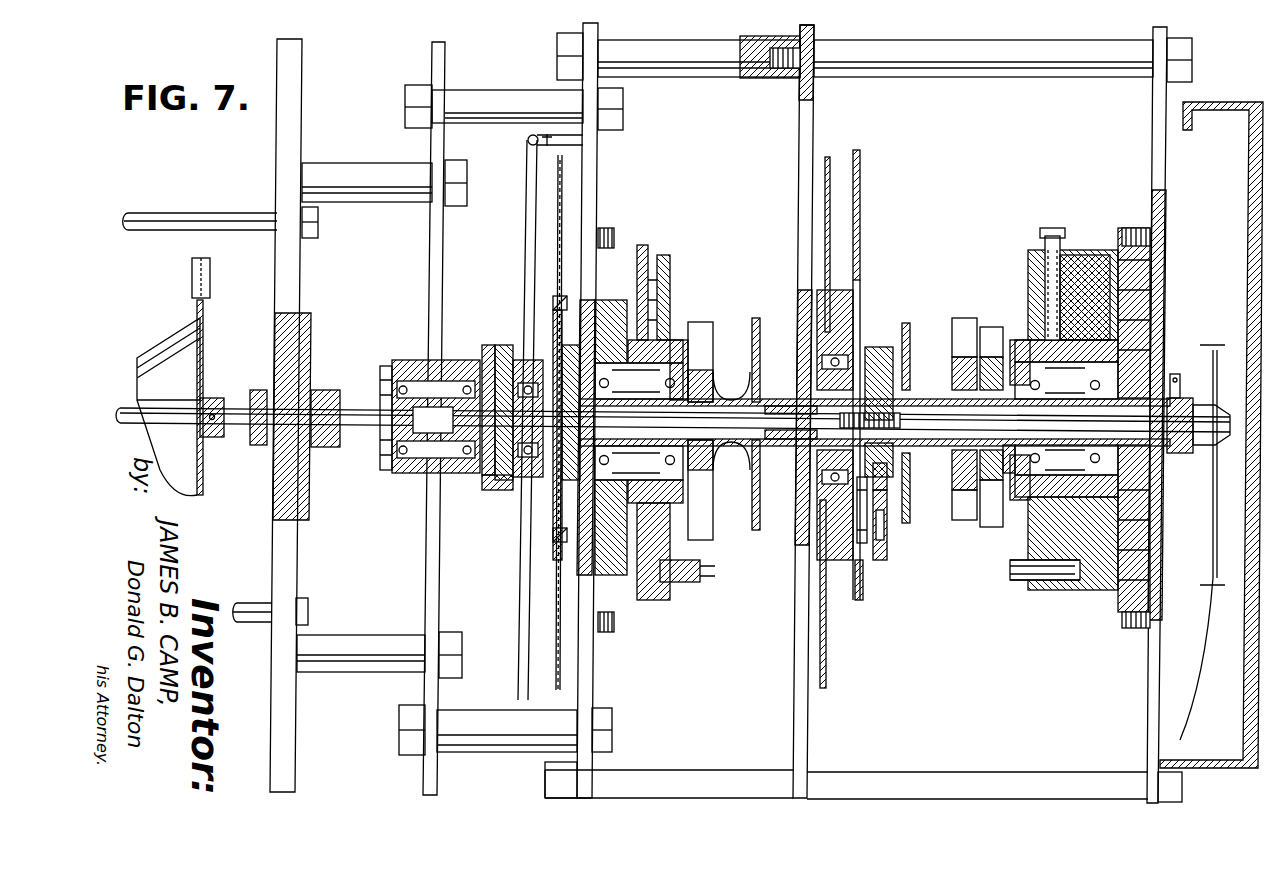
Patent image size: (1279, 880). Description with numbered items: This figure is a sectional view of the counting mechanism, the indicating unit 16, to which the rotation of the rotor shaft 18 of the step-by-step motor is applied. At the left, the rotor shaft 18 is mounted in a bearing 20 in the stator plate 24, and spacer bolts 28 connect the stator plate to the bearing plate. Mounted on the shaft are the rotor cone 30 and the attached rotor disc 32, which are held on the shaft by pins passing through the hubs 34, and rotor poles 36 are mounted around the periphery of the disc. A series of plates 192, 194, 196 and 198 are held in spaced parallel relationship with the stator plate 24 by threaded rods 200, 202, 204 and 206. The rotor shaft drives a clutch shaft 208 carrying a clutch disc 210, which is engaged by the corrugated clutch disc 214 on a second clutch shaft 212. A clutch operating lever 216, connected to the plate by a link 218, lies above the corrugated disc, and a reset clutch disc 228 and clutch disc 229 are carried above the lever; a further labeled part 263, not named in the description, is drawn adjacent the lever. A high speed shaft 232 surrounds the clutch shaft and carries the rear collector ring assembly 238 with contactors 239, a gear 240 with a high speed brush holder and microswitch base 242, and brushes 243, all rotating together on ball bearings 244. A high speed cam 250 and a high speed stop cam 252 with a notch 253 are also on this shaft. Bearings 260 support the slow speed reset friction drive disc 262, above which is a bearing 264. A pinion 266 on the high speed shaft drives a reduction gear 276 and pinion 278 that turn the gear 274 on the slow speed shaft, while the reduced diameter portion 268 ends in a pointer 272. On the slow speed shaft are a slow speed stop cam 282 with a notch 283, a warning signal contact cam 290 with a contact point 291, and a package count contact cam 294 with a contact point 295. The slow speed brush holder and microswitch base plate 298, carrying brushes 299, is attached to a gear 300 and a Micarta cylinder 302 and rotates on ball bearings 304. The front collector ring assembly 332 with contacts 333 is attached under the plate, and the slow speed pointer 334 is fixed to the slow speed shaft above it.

The indicating unit 16 is at (374, 150).
The rotor shaft 18 is at (226, 405).
The bearing 20 is at (250, 438).
The stator plate 24 is at (294, 139).
The spacer bolts 28 is at (152, 212).
The rotor cone 30 is at (168, 352).
The rotor disc 32 is at (203, 345).
The hubs 34 is at (210, 397).
The rotor poles 36 is at (210, 278).
The plate 192 is at (442, 50).
The plate 194 is at (592, 38).
The plate 196 is at (814, 32).
The plate 198 is at (1167, 98).
The threaded rod 200 is at (380, 190).
The threaded rod 202 is at (493, 98).
The threaded rod 204 is at (690, 76).
The threaded rod 206 is at (950, 78).
The clutch shaft 208 is at (422, 380).
The clutch disc 210 is at (485, 345).
The second clutch shaft 212 is at (500, 490).
The corrugated clutch disc 214 is at (508, 330).
The clutch operating lever 216 is at (535, 212).
The link 218 is at (528, 145).
The reset clutch disc 228 is at (525, 360).
The clutch disc 229 is at (566, 177).
The high speed shaft 232 is at (756, 530).
The rear collector ring assembly 238 is at (625, 237).
The contactors 239 is at (636, 612).
The gear 240 is at (643, 246).
The high speed brush holder and microswitch base 242 is at (668, 258).
The brushes 243 is at (660, 584).
The ball bearings 244 is at (681, 340).
The high speed cam 250 is at (705, 330).
The high speed stop cam 252 is at (755, 318).
The notch 253 is at (712, 545).
The bearings 260 is at (800, 548).
The slow speed reset friction drive disc 262 is at (831, 195).
The pin 263 is at (556, 300).
The bearing 264 is at (888, 560).
The pinion 266 is at (870, 347).
The reduced diameter portion 268 is at (954, 470).
The pointer 272 is at (1190, 700).
The gear 274 is at (889, 347).
The reduction gear 276 is at (858, 612).
The pinion 278 is at (870, 545).
The slow speed stop cam 282 is at (920, 318).
The notch 283 is at (908, 523).
The warning signal contact cam 290 is at (952, 360).
The contact point 291 is at (982, 330).
The package count contact cam 294 is at (980, 530).
The contact point 295 is at (1005, 573).
The slow speed brush holder and microswitch base plate 298 is at (1035, 260).
The brushes 299 is at (1078, 598).
The gear 300 is at (1050, 235).
The Micarta cylinder 302 is at (1082, 252).
The ball bearings 304 is at (1020, 342).
The front collector ring assembly 332 is at (1126, 228).
The contacts 333 is at (1116, 606).
The slow speed pointer 334 is at (1182, 620).